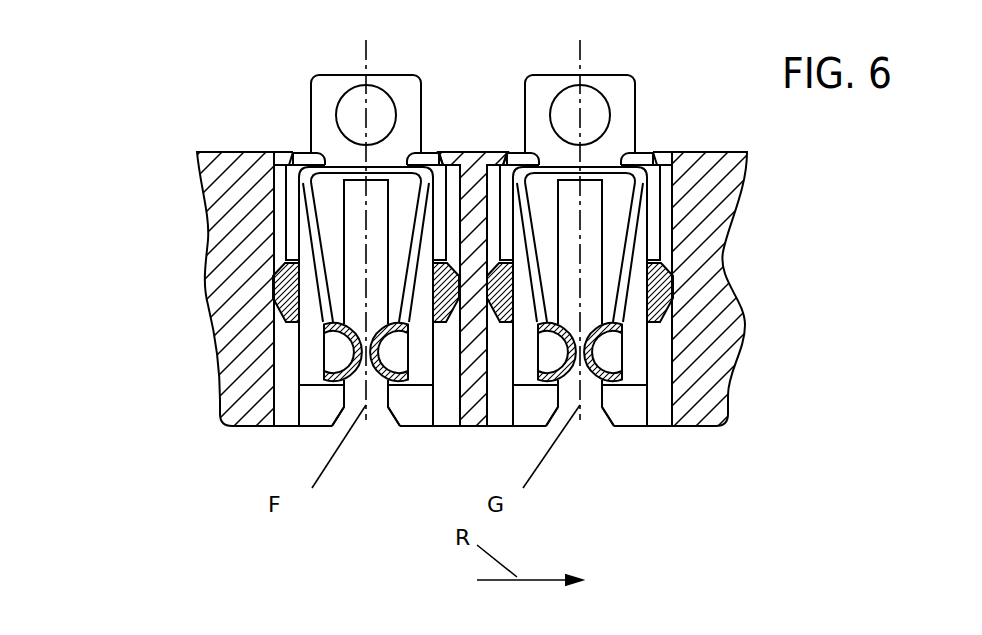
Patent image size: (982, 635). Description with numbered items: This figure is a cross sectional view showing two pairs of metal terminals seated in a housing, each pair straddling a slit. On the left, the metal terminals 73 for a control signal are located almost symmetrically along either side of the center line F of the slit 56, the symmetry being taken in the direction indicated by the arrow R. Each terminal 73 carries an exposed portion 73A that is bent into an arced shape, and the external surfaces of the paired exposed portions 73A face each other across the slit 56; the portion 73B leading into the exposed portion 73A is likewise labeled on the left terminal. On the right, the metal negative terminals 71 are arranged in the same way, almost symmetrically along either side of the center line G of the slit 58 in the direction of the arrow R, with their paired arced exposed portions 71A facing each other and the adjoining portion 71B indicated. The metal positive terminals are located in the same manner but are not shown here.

The metal terminals for a control signal 73 is at (82, 205).
The spring arm of first contact 73B is at (330, 323).
The exposed portions 73A is at (336, 361).
The metal negative terminals 71 is at (855, 207).
The spring arm of second contact 71B is at (622, 314).
The exposed portions 71A is at (603, 370).
The slit 56 is at (373, 438).
The slit 58 is at (588, 438).